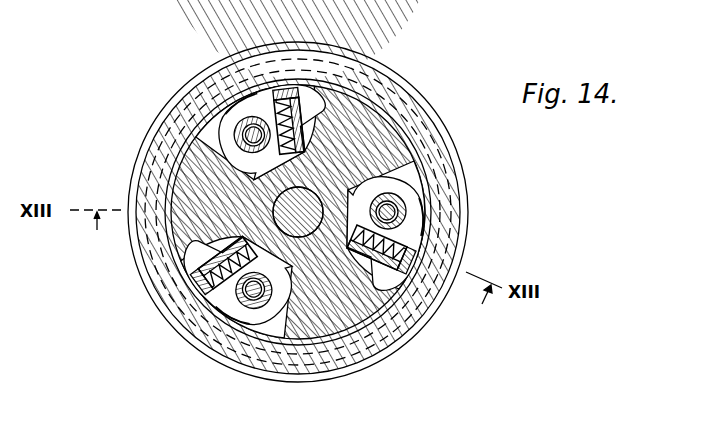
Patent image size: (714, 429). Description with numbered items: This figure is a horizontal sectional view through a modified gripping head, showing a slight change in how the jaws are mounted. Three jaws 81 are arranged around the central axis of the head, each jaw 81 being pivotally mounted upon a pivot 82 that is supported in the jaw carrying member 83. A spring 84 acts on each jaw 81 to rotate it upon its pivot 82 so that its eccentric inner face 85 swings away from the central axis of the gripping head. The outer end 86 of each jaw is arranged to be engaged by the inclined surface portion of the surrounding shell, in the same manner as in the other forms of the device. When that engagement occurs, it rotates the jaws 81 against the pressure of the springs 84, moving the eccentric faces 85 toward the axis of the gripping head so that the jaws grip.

The jaw 81 is at (290, 87).
The pivot 82 is at (392, 208).
The jaw carrying member 83 is at (350, 133).
The spring 84 is at (362, 342).
The eccentric inner face 85 is at (408, 327).
The outer end of jaw 86 is at (430, 242).